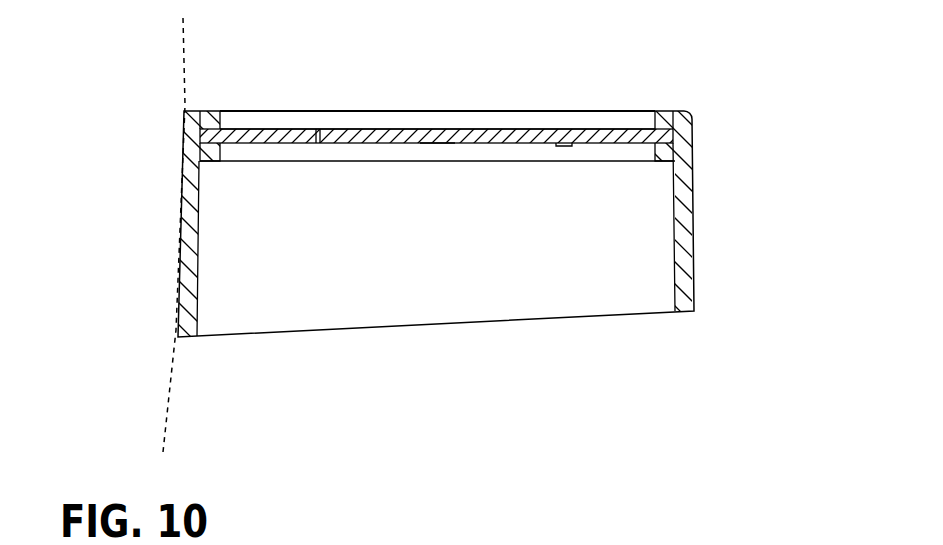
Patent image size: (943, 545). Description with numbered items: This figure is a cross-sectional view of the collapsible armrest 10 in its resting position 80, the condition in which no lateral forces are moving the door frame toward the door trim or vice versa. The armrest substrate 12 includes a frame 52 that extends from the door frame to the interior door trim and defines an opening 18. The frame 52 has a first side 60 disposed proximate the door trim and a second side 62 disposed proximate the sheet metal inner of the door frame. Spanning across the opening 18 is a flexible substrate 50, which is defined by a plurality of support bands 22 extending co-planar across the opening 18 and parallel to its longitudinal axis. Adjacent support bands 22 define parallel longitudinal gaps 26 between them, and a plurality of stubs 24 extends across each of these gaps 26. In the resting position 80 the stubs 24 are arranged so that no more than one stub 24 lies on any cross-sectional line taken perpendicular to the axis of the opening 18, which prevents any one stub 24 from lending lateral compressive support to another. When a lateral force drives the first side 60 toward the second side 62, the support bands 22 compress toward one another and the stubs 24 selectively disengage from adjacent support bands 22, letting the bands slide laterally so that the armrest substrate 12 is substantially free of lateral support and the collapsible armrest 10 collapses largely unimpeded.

The collapsible armrest 10 is at (733, 158).
The armrest substrate 12 is at (470, 110).
The opening 18 is at (305, 110).
The support bands 22 is at (352, 129).
The stubs 24 is at (564, 145).
The gaps 26 is at (437, 130).
The flexible substrate 50 is at (347, 163).
The frame 52 is at (553, 120).
The first side 60 is at (682, 138).
The second side 62 is at (203, 122).
The resting position 80 is at (703, 232).